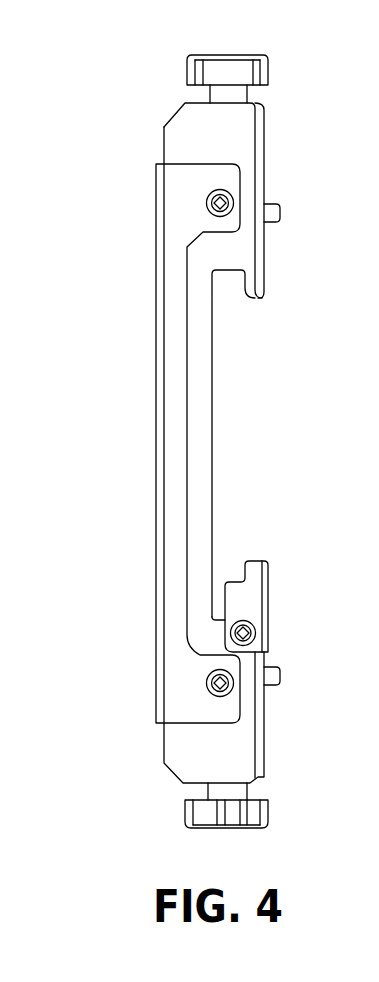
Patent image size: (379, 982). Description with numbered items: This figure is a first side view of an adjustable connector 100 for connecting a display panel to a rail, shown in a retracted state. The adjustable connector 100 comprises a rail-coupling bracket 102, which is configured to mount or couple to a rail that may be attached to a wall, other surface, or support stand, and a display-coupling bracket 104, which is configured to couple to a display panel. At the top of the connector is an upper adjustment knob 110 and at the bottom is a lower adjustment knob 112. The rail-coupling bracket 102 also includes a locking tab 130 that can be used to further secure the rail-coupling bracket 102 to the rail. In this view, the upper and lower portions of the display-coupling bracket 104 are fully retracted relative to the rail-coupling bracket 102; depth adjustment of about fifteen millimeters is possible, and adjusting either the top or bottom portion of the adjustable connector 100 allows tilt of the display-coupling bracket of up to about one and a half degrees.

The adjustable connector 100 is at (122, 79).
The rail-coupling bracket 102 is at (182, 147).
The display-coupling bracket 104 is at (182, 220).
The upper adjustment knob 110 is at (238, 56).
The lower adjustment knob 112 is at (268, 830).
The locking tab 130 is at (268, 563).